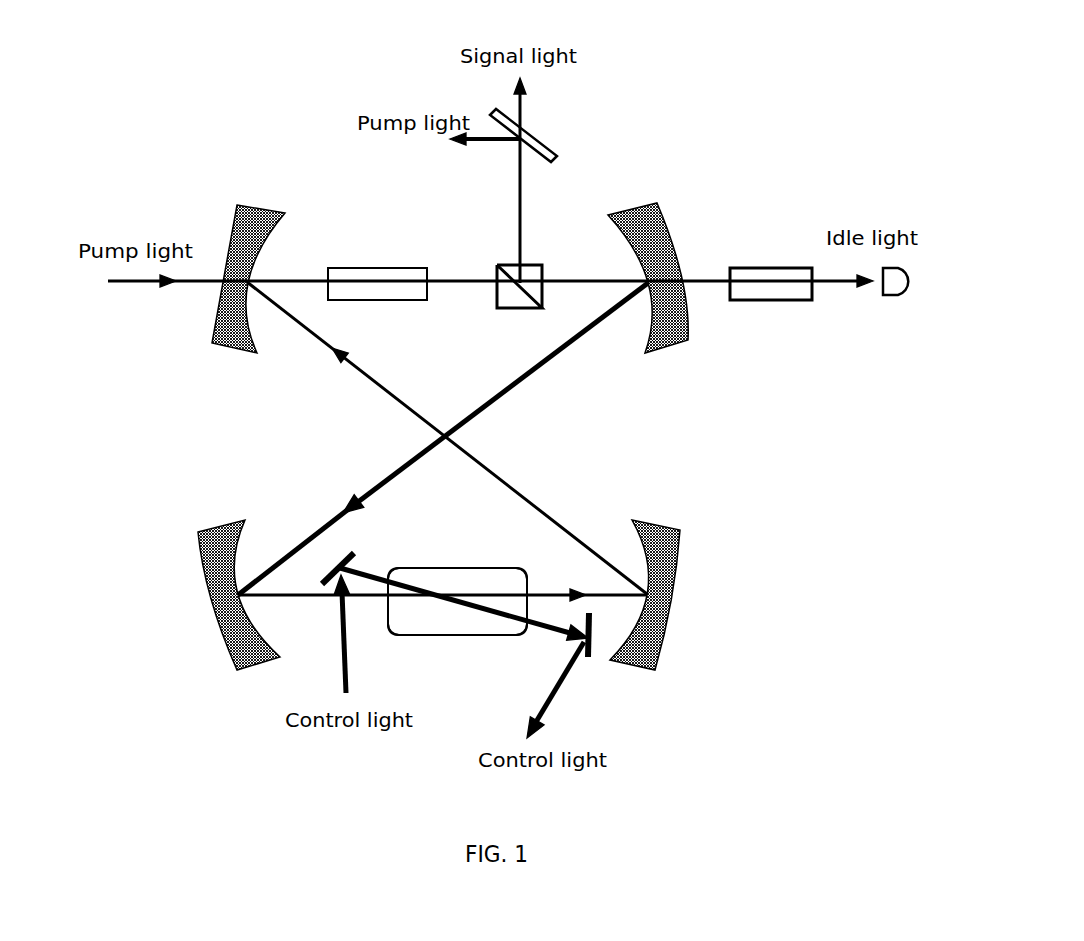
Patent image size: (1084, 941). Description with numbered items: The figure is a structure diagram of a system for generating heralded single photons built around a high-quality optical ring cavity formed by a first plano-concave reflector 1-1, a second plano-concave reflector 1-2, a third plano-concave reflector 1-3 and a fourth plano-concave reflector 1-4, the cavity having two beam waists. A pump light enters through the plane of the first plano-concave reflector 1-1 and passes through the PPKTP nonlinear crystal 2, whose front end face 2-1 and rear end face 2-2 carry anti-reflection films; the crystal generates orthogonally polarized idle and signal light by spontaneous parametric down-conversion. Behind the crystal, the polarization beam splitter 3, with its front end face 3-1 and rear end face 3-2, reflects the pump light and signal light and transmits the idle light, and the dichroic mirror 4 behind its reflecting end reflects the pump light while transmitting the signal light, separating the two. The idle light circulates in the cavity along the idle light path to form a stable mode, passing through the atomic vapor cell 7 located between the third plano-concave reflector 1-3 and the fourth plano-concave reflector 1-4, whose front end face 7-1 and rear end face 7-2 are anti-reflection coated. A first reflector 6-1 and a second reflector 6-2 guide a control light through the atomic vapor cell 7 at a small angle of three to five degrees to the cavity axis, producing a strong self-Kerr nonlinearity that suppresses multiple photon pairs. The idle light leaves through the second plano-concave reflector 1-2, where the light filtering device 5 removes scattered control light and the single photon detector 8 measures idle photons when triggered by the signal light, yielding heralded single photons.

The first plano-concave reflector 1-1 is at (256, 203).
The second plano-concave reflector 1-2 is at (630, 200).
The third plano-concave reflector 1-3 is at (207, 595).
The fourth plano-concave reflector 1-4 is at (682, 582).
The PPKTP nonlinear crystal 2 is at (395, 260).
The front end face 2-1 is at (327, 270).
The rear end face 2-2 is at (436, 274).
The polarization beam splitter 3 is at (524, 312).
The front end face 3-1 is at (494, 296).
The rear end face 3-2 is at (553, 293).
The dichroic mirror 4 is at (541, 140).
The light filtering device 5 is at (778, 302).
The first reflector 6-1 is at (347, 552).
The second reflector 6-2 is at (598, 643).
The atomic vapor cell 7 is at (467, 563).
The front end face 7-1 is at (383, 610).
The rear end face 7-2 is at (535, 633).
The single photon detector 8 is at (905, 297).